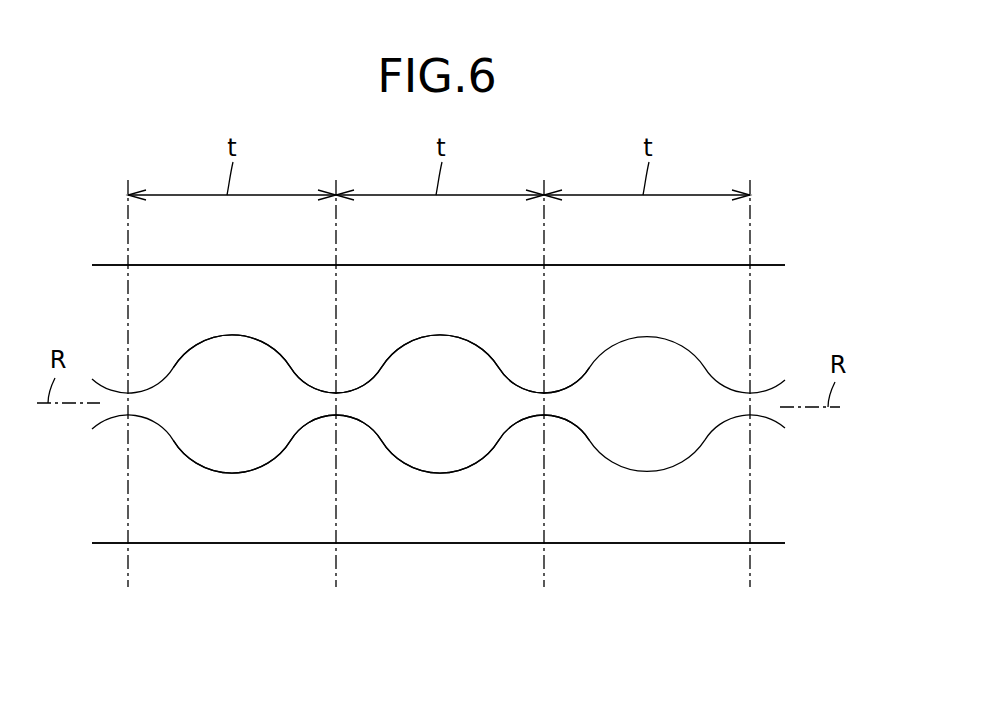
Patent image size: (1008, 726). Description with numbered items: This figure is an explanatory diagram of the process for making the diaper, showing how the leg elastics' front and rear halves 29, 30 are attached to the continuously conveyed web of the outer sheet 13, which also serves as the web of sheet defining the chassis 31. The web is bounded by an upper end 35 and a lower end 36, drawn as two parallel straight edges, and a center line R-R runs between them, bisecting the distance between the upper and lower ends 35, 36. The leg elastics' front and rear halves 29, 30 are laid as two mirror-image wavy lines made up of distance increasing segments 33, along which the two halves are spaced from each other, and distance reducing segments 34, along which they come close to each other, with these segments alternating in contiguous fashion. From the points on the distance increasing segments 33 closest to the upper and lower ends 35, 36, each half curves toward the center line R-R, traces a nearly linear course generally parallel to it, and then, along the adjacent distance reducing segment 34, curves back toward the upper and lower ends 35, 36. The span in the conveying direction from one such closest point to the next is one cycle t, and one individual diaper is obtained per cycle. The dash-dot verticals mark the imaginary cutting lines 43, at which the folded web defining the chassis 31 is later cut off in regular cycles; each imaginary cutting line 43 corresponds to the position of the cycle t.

The outer sheet 13 is at (398, 530).
The leg elastics' front half 29 is at (673, 342).
The leg elastics' rear half 30 is at (673, 470).
The chassis 31 is at (777, 244).
The distance increasing segments 33 is at (248, 335).
The distance reducing segments 34 is at (325, 388).
The upper end 35 is at (645, 265).
The lower end 36 is at (470, 545).
The imaginary cutting line 43 is at (128, 565).